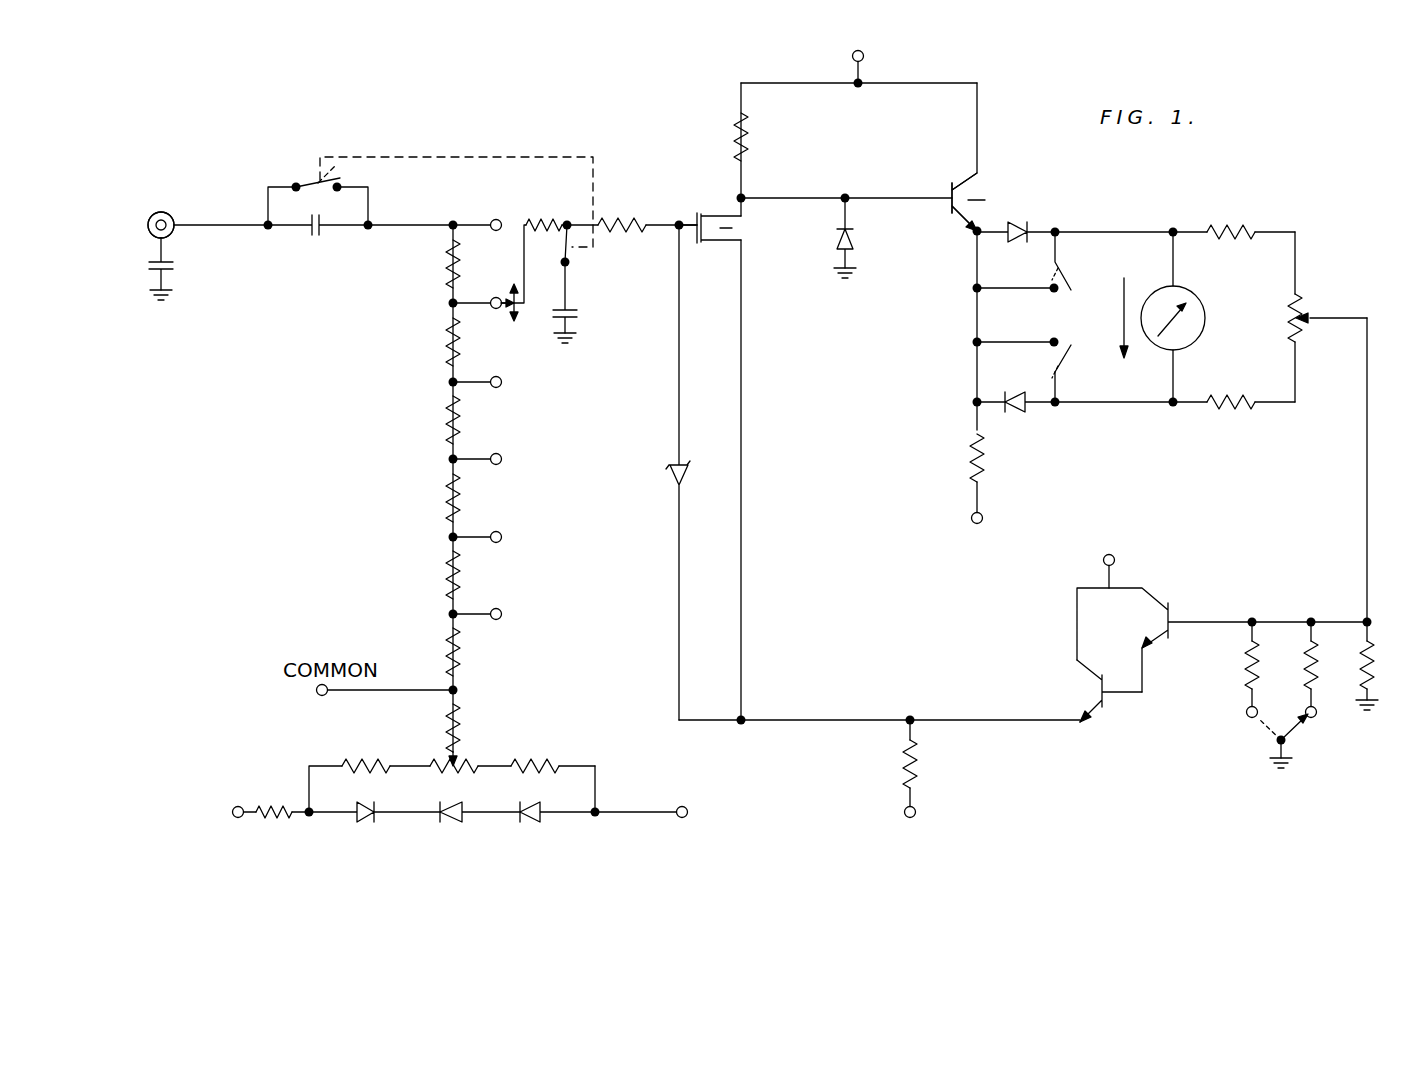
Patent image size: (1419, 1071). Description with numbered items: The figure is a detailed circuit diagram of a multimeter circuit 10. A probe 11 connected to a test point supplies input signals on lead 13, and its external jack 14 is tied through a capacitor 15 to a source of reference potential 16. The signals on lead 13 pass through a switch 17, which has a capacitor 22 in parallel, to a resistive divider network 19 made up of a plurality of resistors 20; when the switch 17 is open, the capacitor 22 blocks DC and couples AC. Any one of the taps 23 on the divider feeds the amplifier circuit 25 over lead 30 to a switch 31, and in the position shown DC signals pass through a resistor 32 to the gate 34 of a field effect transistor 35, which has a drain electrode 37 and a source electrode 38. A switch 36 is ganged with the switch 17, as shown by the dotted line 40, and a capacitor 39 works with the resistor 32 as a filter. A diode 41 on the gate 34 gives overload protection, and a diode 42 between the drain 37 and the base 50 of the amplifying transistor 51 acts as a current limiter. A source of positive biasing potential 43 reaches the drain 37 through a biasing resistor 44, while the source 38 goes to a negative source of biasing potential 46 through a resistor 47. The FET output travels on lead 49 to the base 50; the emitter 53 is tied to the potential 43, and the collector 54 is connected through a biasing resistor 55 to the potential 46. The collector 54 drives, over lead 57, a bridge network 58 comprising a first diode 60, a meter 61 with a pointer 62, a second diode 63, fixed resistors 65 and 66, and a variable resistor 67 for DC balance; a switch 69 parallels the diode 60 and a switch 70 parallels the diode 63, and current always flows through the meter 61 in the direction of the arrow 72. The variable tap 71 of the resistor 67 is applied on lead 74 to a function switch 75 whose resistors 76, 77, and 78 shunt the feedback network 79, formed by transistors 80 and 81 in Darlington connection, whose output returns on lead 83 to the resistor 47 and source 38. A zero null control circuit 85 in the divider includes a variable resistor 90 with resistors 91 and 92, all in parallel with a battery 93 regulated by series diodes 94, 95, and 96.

The multimeter circuit 10 is at (645, 155).
The probe 11 is at (168, 196).
The lead 13 is at (224, 220).
The external jack 14 is at (149, 234).
The capacitor 15 is at (172, 266).
The source of reference potential 16 is at (173, 301).
The switch 17 is at (304, 183).
The resistive divider network 19 is at (408, 432).
The resistors 20 is at (440, 340).
The capacitor 22 is at (312, 230).
The taps 23 is at (500, 455).
The amplifier circuit 25 is at (886, 170).
The lead 30 is at (522, 268).
The switch 31 is at (516, 318).
The resistor 32 is at (541, 216).
The gate 34 is at (684, 220).
The field effect transistor 35 is at (716, 228).
The switch 36 is at (570, 263).
The drain electrode 37 is at (716, 214).
The source electrode 38 is at (714, 245).
The capacitor 39 is at (578, 314).
The dotted line 40 is at (390, 155).
The diode 41 is at (672, 482).
The diode 42 is at (852, 245).
The source of positive biasing potential 43 is at (866, 55).
The biasing resistor 44 is at (748, 130).
The negative source of biasing potential 46 is at (970, 519).
The resistor 47 is at (918, 758).
The lead 49 is at (782, 196).
The base 50 is at (942, 190).
The amplifying transistor 51 is at (966, 200).
The emitter 53 is at (960, 185).
The collector 54 is at (966, 228).
The biasing resistor 55 is at (986, 468).
The lead 57 is at (974, 375).
The bridge network 58 is at (1186, 222).
The first diode 60 is at (1018, 220).
The meter 61 is at (1188, 298).
The pointer 62 is at (1195, 316).
The second diode 63 is at (1016, 412).
The fixed resistor 65 is at (1226, 228).
The fixed resistor 66 is at (1228, 408).
The variable resistor 67 is at (1299, 292).
The switch 69 is at (1063, 278).
The switch 70 is at (1063, 356).
The variable tap 71 is at (1312, 322).
The arrow 72 is at (1122, 320).
The lead 74 is at (1365, 455).
The function switch 75 is at (1290, 745).
The resistor 76 is at (1246, 662).
The resistor 77 is at (1306, 662).
The resistor 78 is at (1364, 660).
The feedback network 79 is at (980, 708).
The transistor 80 is at (1186, 607).
The transistor 81 is at (1093, 694).
The lead 83 is at (744, 463).
The zero null control circuit 85 is at (606, 784).
The variable resistor 90 is at (462, 762).
The resistor 91 is at (532, 762).
The resistor 92 is at (358, 760).
The battery 93 is at (240, 820).
The diode 94 is at (362, 822).
The diode 95 is at (452, 822).
The diode 96 is at (538, 822).